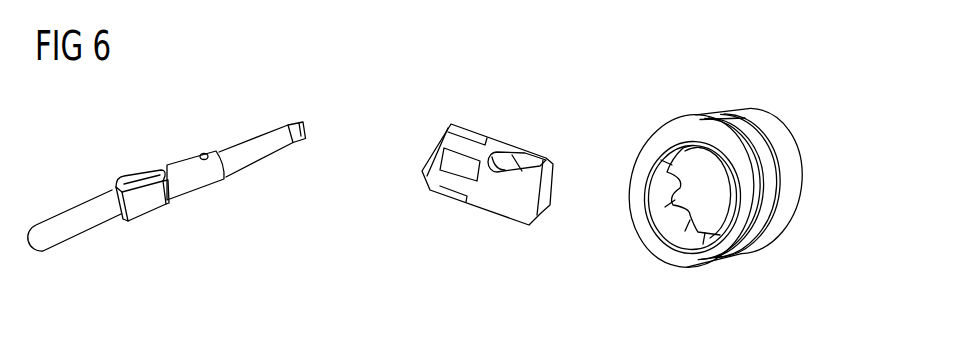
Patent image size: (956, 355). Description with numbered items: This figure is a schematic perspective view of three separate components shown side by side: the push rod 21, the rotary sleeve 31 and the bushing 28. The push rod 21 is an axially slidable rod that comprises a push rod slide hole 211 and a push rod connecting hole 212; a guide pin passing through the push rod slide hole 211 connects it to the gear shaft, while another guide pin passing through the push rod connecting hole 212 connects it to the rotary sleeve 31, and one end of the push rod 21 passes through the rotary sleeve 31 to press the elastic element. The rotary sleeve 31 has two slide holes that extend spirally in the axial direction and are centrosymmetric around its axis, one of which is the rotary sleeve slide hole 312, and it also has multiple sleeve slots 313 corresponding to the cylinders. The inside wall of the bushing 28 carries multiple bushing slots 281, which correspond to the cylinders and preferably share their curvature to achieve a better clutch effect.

The push rod 21 is at (167, 167).
The push rod slide hole 211 is at (138, 180).
The push rod connecting hole 212 is at (206, 152).
The rotary sleeve 31 is at (487, 185).
The rotary sleeve slide hole 312 is at (495, 156).
The sleeve slot 313 is at (454, 166).
The bushing 28 is at (696, 169).
The bushing slot 281 is at (677, 217).